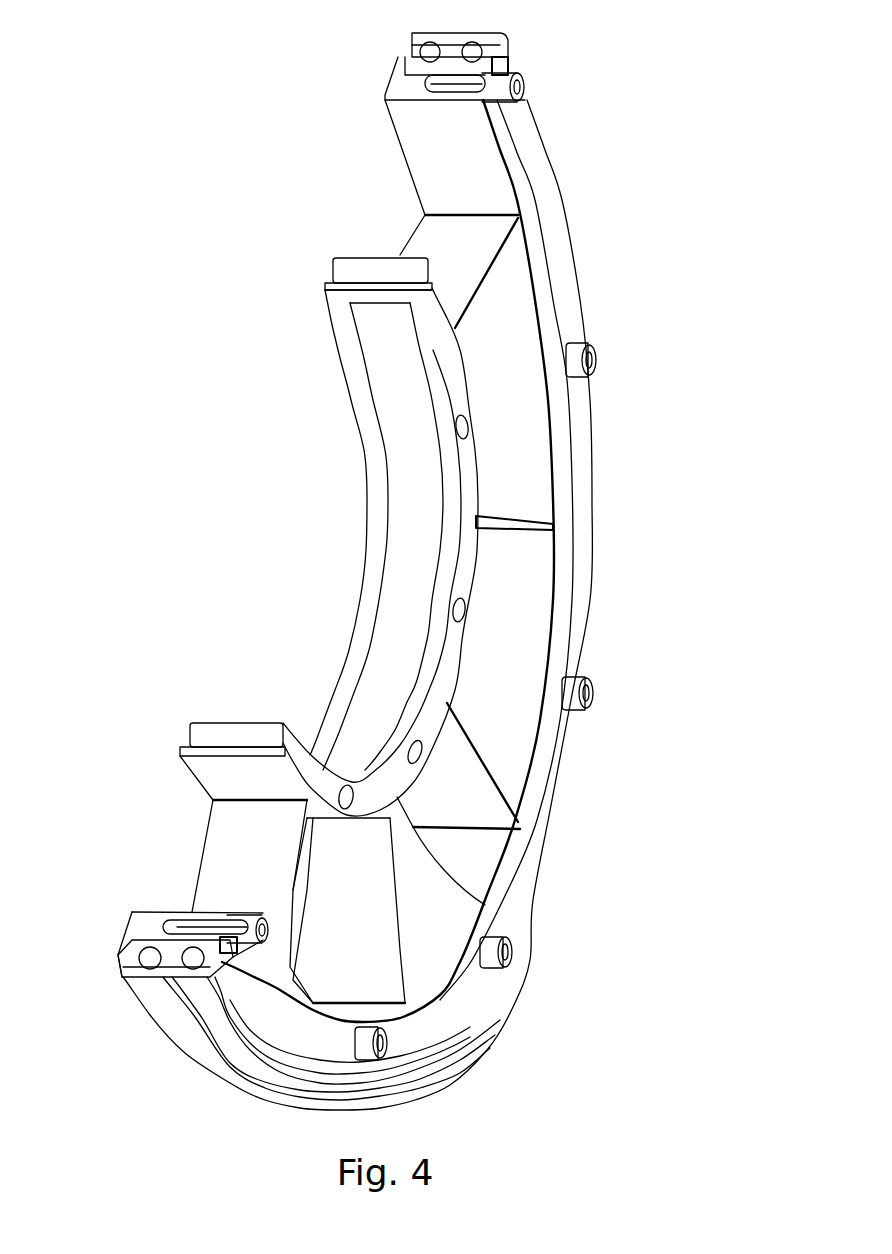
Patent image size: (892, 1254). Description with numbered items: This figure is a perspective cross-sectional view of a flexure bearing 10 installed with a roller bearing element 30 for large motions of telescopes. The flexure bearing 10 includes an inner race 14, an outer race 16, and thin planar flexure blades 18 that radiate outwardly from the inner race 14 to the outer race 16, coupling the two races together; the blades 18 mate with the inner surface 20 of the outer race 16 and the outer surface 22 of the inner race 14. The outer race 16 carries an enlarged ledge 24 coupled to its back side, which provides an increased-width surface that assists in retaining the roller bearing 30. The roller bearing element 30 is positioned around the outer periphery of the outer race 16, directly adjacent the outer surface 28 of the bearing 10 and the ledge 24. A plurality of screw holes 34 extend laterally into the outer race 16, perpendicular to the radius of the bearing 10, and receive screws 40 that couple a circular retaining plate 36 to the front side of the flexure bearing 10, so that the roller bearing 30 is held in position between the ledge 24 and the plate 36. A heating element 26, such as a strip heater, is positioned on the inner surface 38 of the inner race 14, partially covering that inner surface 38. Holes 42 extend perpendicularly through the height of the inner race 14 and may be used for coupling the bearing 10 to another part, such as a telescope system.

The flexure bearing 10 is at (700, 258).
The inner race 14 is at (378, 478).
The outer race 16 is at (522, 578).
The flexure blades 18 is at (370, 965).
The inner surface of the outer race 20 is at (505, 750).
The outer surface of the inner race 22 is at (215, 777).
The ledge 24 is at (123, 952).
The heating element 26 is at (395, 606).
The outer surface 28 is at (150, 940).
The roller bearing element 30 is at (490, 40).
The screw holes 34 is at (447, 87).
The retaining plate 36 is at (528, 877).
The inner surface of the inner race 38 is at (370, 548).
The screws 40 is at (530, 84).
The holes 42 is at (348, 270).